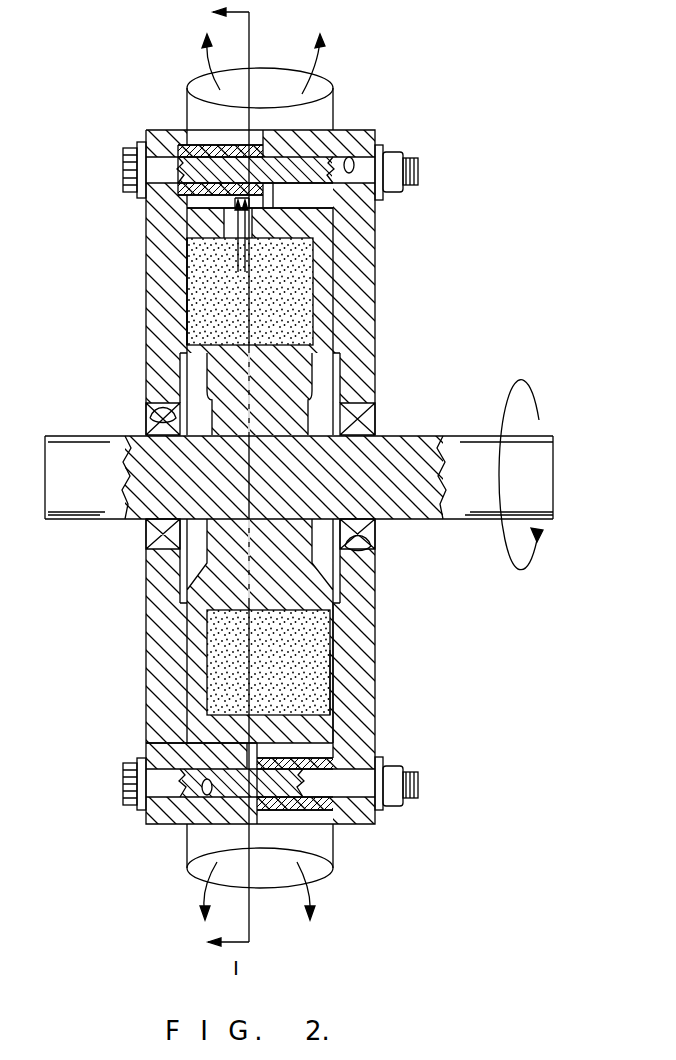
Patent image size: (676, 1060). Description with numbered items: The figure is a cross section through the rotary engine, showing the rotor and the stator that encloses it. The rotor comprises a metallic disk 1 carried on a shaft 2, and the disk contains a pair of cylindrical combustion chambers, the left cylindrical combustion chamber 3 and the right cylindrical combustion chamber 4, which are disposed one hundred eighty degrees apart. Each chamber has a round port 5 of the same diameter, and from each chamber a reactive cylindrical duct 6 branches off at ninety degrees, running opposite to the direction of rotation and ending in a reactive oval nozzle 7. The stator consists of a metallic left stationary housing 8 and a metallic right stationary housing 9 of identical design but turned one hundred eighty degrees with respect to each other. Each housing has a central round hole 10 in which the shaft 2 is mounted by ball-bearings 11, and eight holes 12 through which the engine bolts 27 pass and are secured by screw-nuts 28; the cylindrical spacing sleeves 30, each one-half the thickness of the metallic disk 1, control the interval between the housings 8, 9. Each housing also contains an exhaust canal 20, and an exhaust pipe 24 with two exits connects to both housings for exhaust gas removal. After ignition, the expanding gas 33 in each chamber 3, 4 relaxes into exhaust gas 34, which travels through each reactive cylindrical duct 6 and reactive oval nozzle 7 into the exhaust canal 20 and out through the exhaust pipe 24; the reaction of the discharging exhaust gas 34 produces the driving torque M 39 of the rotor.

The metallic disk 1 is at (272, 389).
The shaft 2 is at (464, 489).
The left cylindrical combustion chamber 3 is at (270, 299).
The right cylindrical combustion chamber 4 is at (265, 671).
The round port 5 is at (178, 299).
The reactive cylindrical duct 6 is at (232, 238).
The reactive oval nozzle 7 is at (200, 196).
The left stationary housing 8 is at (160, 324).
The right stationary housing 9 is at (347, 684).
The round hole 10 is at (167, 407).
The ball-bearings 11 is at (363, 424).
The holes 12 is at (348, 158).
The exhaust canal 20 is at (217, 137).
The exhaust pipe 24 is at (260, 95).
The engine bolts 27 is at (128, 172).
The screw-nuts 28 is at (393, 155).
The cylindrical spacing sleeves 30 is at (210, 147).
The expanding gas 33 is at (288, 321).
The exhaust gas 34 is at (315, 70).
The driving torque M 39 is at (497, 533).